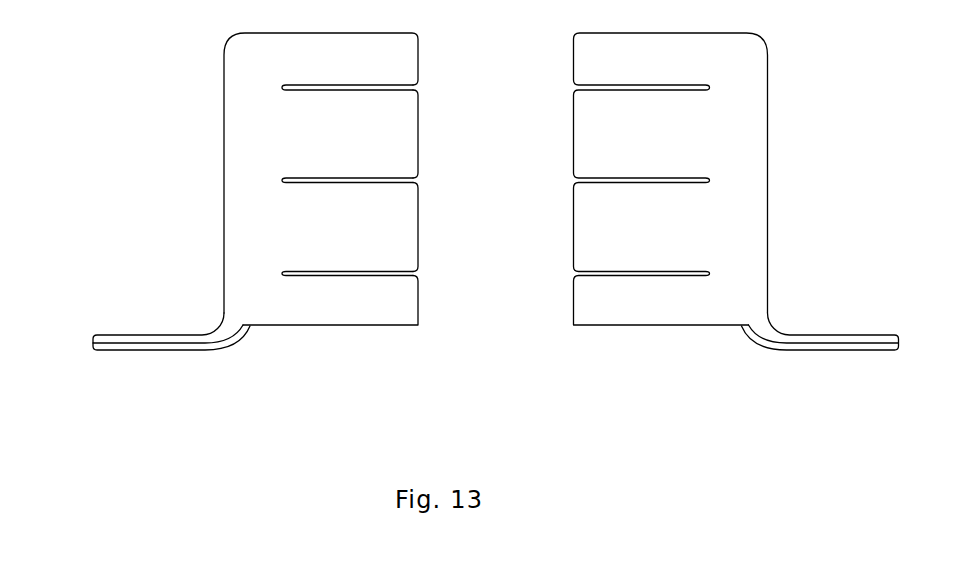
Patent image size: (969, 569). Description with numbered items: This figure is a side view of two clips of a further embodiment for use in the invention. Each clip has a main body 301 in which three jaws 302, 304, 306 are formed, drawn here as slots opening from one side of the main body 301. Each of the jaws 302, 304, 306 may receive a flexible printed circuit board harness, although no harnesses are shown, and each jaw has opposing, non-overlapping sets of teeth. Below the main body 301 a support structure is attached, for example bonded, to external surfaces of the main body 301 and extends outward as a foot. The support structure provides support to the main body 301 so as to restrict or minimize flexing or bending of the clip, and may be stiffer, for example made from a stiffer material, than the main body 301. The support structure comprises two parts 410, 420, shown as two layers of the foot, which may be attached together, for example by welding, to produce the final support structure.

The main body 301 is at (255, 138).
The jaw 302 is at (282, 87).
The jaw 304 is at (282, 180).
The jaw 306 is at (282, 273).
The part of support structure 410 is at (122, 337).
The part of support structure 420 is at (167, 350).